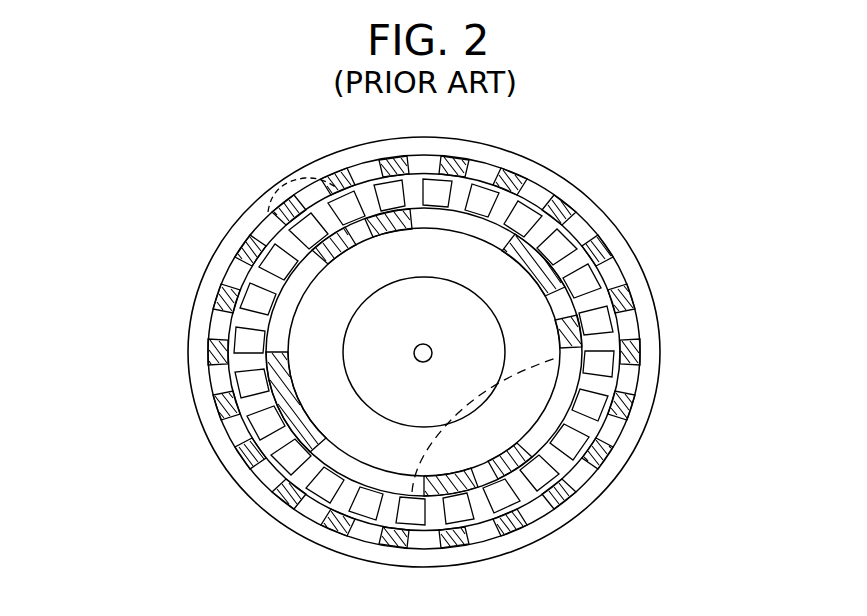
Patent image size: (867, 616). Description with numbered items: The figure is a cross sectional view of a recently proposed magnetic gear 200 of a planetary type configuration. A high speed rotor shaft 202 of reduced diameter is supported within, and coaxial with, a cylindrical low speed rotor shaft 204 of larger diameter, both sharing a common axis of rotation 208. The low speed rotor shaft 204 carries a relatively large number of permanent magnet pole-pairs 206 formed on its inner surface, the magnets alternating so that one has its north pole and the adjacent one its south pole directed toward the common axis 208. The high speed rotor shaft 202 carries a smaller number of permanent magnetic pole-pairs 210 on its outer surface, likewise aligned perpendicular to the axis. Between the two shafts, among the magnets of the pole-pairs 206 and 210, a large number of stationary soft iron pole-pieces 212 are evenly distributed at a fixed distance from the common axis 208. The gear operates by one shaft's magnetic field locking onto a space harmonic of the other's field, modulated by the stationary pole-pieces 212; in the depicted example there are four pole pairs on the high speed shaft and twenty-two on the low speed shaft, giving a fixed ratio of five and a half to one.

The magnetic gear 200 is at (130, 209).
The high speed rotor shaft 202 is at (512, 307).
The low speed rotor shaft 204 is at (566, 181).
The permanent magnet pole-pairs 206 is at (290, 192).
The common axis of rotation 208 is at (432, 352).
The permanent magnetic pole-pairs 210 is at (612, 405).
The stationary soft iron pole-pieces 212 is at (233, 398).